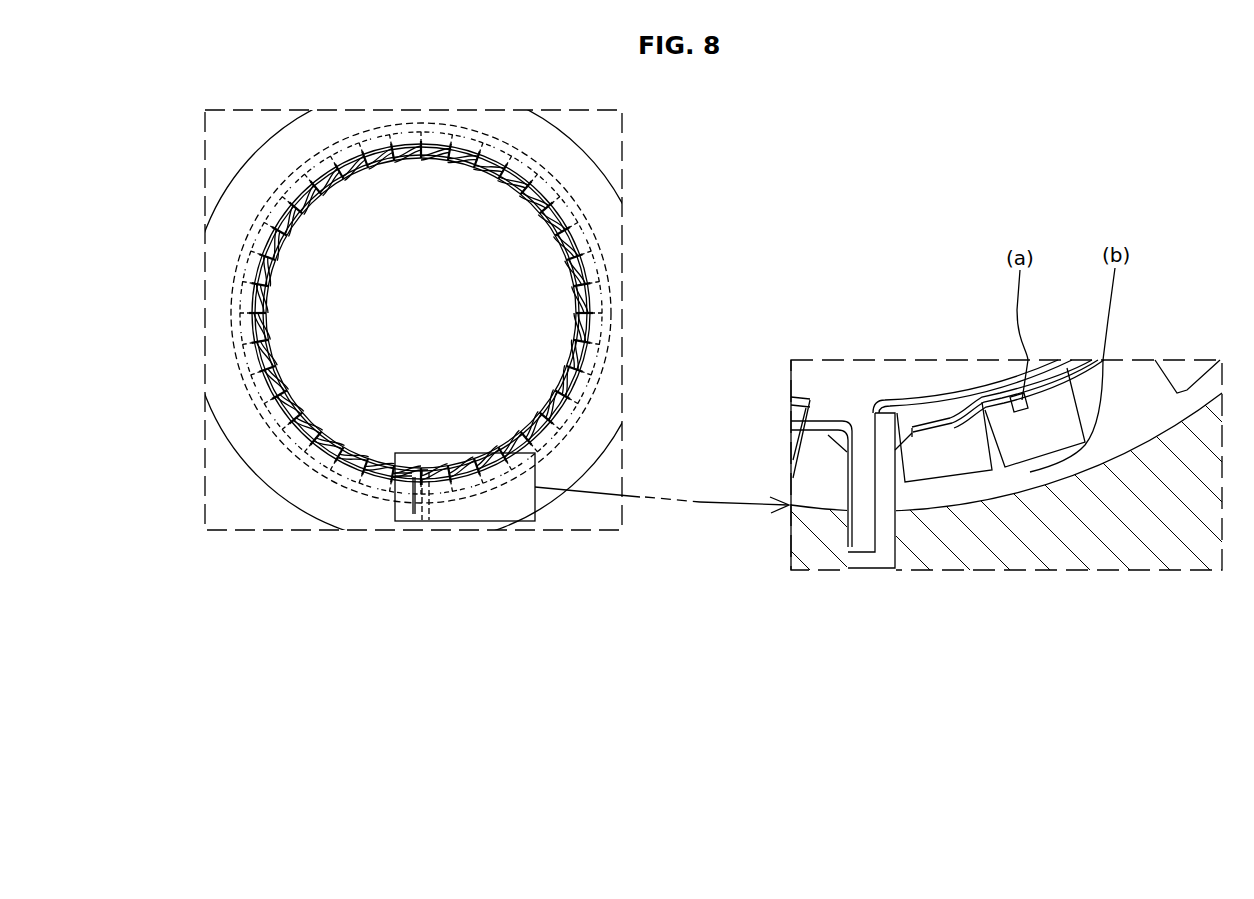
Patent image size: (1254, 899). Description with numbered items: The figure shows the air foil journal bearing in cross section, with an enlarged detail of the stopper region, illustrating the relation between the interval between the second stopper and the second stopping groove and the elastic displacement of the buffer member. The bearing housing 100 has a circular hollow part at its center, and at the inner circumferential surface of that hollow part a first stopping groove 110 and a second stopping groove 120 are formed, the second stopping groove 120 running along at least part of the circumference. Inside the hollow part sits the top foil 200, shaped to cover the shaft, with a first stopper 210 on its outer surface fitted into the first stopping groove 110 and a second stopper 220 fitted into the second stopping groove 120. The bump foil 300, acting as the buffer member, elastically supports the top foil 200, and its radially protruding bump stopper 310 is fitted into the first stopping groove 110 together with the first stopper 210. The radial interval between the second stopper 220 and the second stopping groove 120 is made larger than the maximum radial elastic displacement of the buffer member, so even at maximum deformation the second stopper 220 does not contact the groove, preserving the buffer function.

The bearing housing 100 is at (221, 188).
The first stopping groove 110 is at (865, 555).
The second stopping groove 120 is at (957, 497).
The top foil 200 is at (307, 443).
The first stopper 210 is at (868, 422).
The second stopper 220 is at (1130, 402).
The bump foil 300 is at (1046, 385).
The bump stopper 310 is at (850, 526).